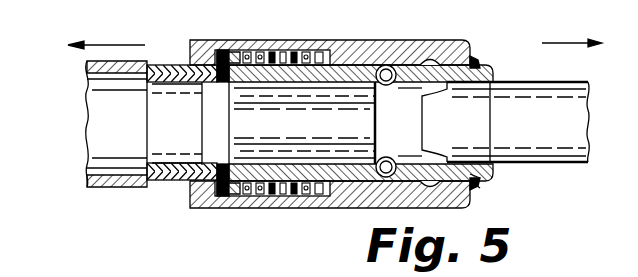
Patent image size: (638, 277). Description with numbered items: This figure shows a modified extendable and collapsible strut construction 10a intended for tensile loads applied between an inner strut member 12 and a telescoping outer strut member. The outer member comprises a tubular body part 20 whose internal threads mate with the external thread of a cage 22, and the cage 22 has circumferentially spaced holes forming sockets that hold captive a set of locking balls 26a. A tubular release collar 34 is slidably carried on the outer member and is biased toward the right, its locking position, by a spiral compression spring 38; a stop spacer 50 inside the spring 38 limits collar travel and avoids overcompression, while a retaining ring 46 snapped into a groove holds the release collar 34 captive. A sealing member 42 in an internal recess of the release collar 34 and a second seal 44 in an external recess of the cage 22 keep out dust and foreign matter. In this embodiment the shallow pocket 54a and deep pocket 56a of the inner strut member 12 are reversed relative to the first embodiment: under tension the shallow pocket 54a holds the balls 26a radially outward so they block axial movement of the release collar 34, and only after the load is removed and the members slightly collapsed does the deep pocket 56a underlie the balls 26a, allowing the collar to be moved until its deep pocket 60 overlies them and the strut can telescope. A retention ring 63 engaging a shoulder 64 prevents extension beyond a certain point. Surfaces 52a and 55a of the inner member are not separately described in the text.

The strut construction 10a is at (145, 205).
The inner strut member 12 is at (514, 97).
The tubular body part 20 is at (87, 128).
The cage 22 is at (347, 200).
The balls 26a is at (381, 65).
The release collar 34 is at (283, 49).
The spiral compression spring 38 is at (300, 197).
The sealing member 42 is at (469, 54).
The second seal 44 is at (229, 48).
The retaining ring 46 is at (474, 187).
The stop spacer 50 is at (262, 206).
The inner wall 52a is at (297, 101).
The shallow pocket 54a is at (375, 123).
The tube end portion 55a is at (452, 115).
The deep pocket 56a is at (473, 175).
The deep pocket 60 is at (431, 56).
The retention ring 63 is at (222, 124).
The shoulder 64 is at (233, 141).